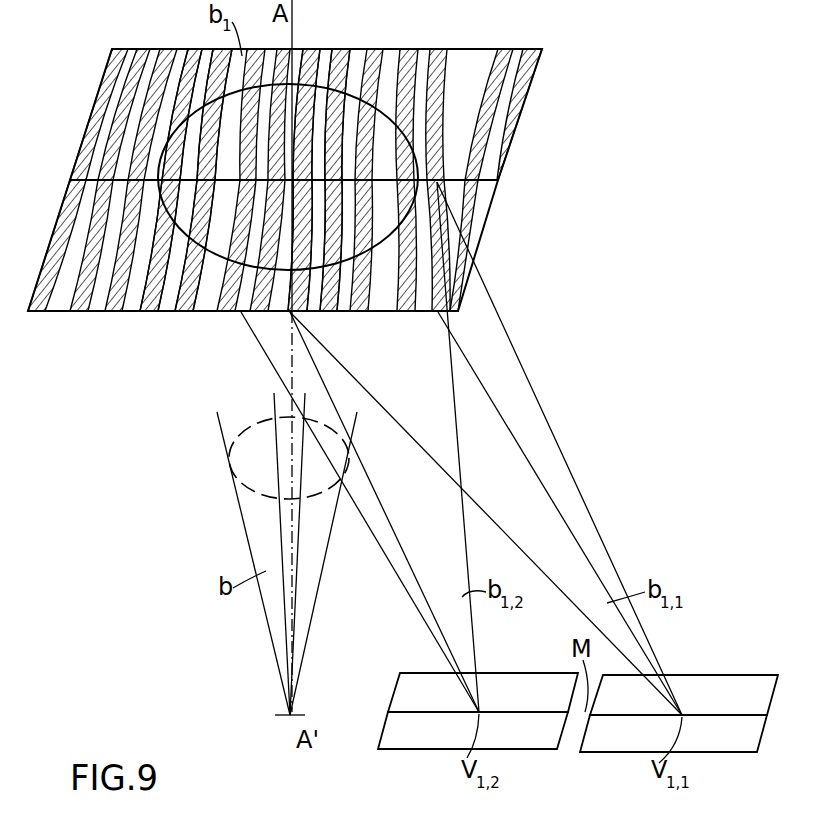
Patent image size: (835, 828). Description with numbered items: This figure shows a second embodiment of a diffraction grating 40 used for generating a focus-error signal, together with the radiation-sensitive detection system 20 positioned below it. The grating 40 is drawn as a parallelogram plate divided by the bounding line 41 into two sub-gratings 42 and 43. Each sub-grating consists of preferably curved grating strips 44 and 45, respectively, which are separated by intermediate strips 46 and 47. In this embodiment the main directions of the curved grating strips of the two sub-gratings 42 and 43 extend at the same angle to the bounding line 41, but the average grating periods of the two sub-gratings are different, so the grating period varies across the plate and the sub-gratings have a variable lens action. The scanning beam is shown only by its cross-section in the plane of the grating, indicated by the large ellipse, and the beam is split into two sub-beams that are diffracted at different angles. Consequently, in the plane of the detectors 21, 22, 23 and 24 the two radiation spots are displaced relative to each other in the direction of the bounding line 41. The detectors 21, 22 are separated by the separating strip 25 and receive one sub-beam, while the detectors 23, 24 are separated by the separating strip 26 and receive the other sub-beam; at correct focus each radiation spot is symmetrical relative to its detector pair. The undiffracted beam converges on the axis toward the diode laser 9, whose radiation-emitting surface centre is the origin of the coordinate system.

The diode laser 9 is at (277, 722).
The radiation-sensitive detection system 20 is at (559, 726).
The detector 21 is at (735, 688).
The detector 22 is at (735, 742).
The detector 23 is at (402, 695).
The detector 24 is at (388, 735).
The separating strip 25 is at (700, 715).
The separating strip 26 is at (392, 716).
The grating 40 is at (386, 46).
The bounding line 41 is at (69, 178).
The sub-grating 42 is at (103, 78).
The sub-grating 43 is at (60, 232).
The grating strips 44 is at (306, 57).
The grating strips 45 is at (150, 304).
The intermediate strips 46 is at (350, 57).
The intermediate strips 47 is at (203, 304).